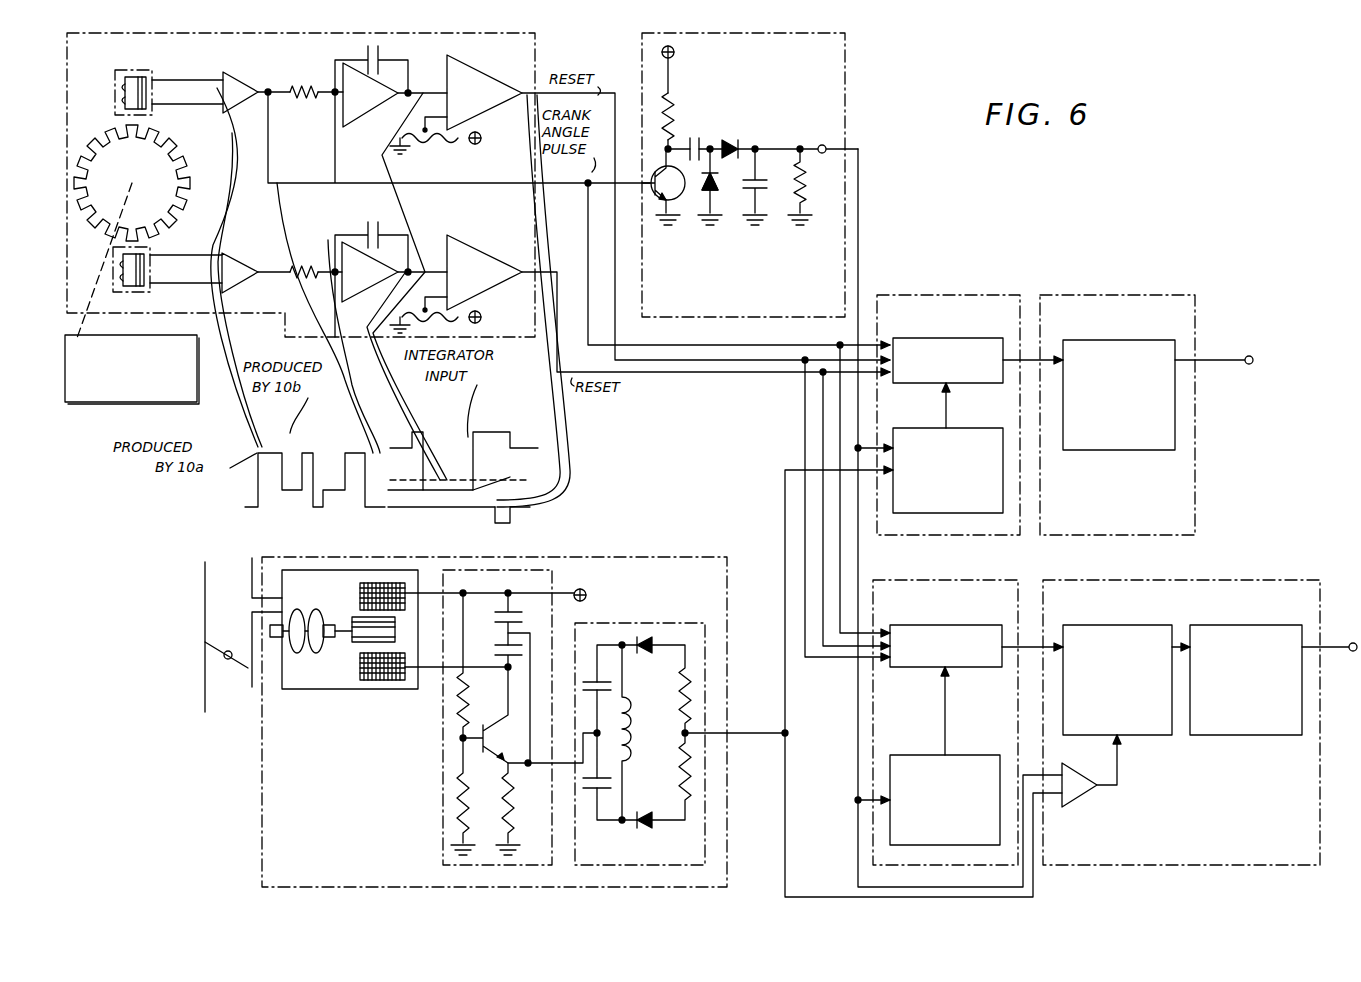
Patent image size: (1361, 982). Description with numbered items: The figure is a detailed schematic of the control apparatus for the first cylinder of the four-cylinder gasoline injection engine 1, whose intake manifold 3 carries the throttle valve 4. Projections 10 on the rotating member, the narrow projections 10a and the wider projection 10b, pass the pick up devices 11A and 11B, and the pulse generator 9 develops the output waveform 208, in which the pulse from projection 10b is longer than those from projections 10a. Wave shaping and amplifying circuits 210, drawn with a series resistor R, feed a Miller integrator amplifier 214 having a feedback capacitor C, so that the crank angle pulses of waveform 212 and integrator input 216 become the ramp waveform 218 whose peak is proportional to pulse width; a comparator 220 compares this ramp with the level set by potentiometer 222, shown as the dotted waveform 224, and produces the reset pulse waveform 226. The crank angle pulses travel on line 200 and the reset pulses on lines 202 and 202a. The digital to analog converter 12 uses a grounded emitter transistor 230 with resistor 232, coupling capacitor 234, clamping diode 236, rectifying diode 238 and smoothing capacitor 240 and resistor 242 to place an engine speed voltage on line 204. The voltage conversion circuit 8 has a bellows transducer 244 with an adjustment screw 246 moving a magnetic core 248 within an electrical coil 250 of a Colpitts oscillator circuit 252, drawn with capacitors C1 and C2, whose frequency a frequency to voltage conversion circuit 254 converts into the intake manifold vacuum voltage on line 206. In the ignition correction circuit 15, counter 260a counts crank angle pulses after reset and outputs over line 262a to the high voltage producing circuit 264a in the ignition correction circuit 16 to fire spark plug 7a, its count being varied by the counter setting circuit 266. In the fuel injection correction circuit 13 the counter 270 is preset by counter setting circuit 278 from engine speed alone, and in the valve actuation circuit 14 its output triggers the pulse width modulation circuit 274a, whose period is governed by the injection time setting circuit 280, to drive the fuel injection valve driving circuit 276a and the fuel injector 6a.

The four-cylinder gasoline injection engine 1 is at (58, 352).
The intake manifold 3 is at (196, 576).
The throttle valve 4 is at (227, 660).
The fuel injector 6a is at (1356, 644).
The spark plug 7a is at (1242, 359).
The voltage conversion circuit 8 is at (730, 586).
The pulse generator 9 is at (532, 68).
The projections 10 is at (172, 192).
The projections 10a is at (179, 158).
The projection 10b is at (158, 140).
The pick up device 11A is at (130, 72).
The pick up device 11B is at (140, 297).
The digital to analog converter 12 is at (840, 66).
The fuel injection correction circuit 13 is at (1014, 581).
The valve actuation circuit 14 is at (1316, 581).
The ignition correction circuit 15 is at (1008, 295).
The ignition correction circuit 16 is at (1192, 295).
The line 200 is at (730, 356).
The line 202 is at (772, 360).
The line 202a is at (774, 378).
The line 204 is at (858, 220).
The line 206 is at (870, 476).
The waveform 208 is at (244, 452).
The wave shaping and amplifying circuits 210 is at (254, 84).
The waveform 212 is at (246, 509).
The integrating amplifier 214 is at (388, 110).
The waveform 216 is at (410, 443).
The waveform 218 is at (395, 490).
The comparator 220 is at (495, 67).
The potentiometer 222 is at (452, 142).
The waveform 224 is at (506, 482).
The waveform 226 is at (510, 516).
The transistor 230 is at (684, 200).
The resistor 232 is at (676, 98).
The capacitor 234 is at (688, 138).
The diode 236 is at (724, 230).
The diode 238 is at (734, 140).
The capacitor 240 is at (772, 200).
The resistor 242 is at (825, 218).
The bellows transducer 244 is at (340, 612).
The adjustment screw 246 is at (265, 596).
The magnetic core 248 is at (332, 646).
The electrical coil 250 is at (402, 687).
The Colpitts oscillator circuit 252 is at (520, 729).
The frequency to voltage conversion circuit 254 is at (600, 868).
The counter 260a is at (1000, 338).
The line 262a is at (1031, 358).
The high voltage producing circuit 264a is at (1172, 339).
The counter setting circuit 266 is at (1000, 428).
The counter 270 is at (1008, 620).
The pulse width modulation circuit 274a is at (1172, 624).
The fuel injection valve driving circuit 276a is at (1302, 624).
The counter setting circuit 278 is at (1000, 754).
The injection time setting circuit 280 is at (1074, 799).
The resistor R is at (310, 88).
The capacitor C is at (384, 40).
The capacitor C1 is at (495, 619).
The capacitor C2 is at (499, 698).